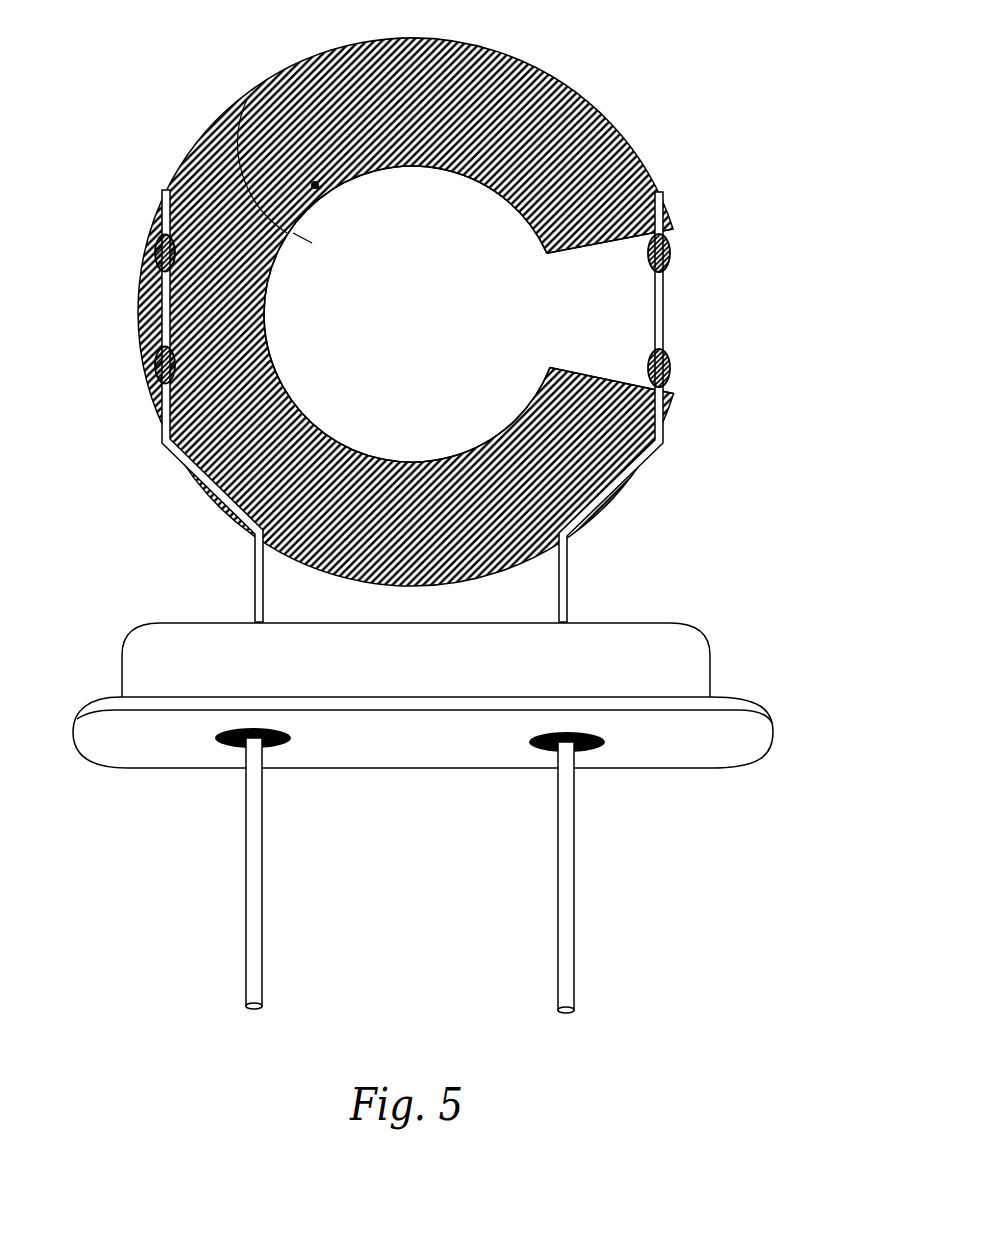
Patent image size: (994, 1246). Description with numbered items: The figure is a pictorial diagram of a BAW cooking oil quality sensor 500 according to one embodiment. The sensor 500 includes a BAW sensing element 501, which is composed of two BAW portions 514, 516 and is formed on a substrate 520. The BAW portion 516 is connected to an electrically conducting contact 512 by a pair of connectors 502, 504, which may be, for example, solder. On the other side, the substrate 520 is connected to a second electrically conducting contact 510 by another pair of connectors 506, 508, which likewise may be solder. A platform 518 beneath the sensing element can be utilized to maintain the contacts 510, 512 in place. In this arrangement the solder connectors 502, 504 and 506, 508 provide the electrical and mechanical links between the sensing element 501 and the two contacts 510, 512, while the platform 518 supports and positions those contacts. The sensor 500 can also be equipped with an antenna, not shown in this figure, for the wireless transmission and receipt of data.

The BAW cooking oil quality sensor 500 is at (750, 85).
The BAW sensing element 501 is at (254, 96).
The connector 502 is at (670, 248).
The connector 504 is at (670, 365).
The connector 506 is at (147, 258).
The connector 508 is at (148, 378).
The electrically conducting contact 510 is at (162, 203).
The electrically conducting contact 512 is at (668, 204).
The BAW portion 514 is at (250, 136).
The BAW portion 516 is at (680, 302).
The platform 518 is at (698, 652).
The substrate 520 is at (303, 64).